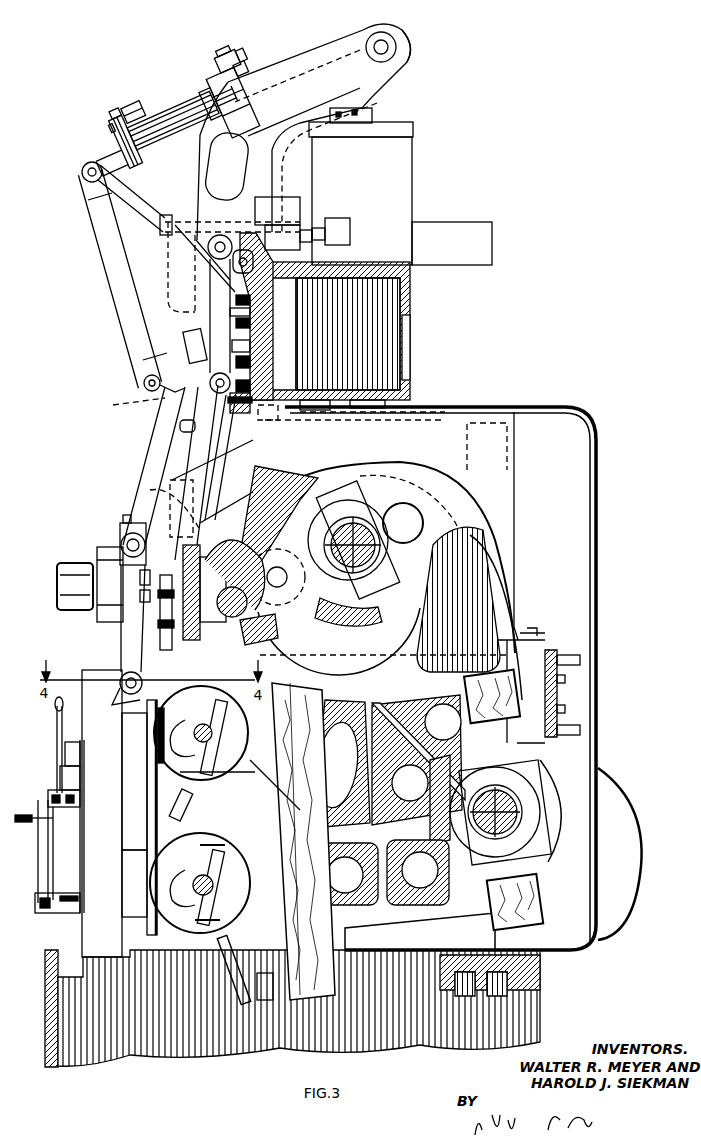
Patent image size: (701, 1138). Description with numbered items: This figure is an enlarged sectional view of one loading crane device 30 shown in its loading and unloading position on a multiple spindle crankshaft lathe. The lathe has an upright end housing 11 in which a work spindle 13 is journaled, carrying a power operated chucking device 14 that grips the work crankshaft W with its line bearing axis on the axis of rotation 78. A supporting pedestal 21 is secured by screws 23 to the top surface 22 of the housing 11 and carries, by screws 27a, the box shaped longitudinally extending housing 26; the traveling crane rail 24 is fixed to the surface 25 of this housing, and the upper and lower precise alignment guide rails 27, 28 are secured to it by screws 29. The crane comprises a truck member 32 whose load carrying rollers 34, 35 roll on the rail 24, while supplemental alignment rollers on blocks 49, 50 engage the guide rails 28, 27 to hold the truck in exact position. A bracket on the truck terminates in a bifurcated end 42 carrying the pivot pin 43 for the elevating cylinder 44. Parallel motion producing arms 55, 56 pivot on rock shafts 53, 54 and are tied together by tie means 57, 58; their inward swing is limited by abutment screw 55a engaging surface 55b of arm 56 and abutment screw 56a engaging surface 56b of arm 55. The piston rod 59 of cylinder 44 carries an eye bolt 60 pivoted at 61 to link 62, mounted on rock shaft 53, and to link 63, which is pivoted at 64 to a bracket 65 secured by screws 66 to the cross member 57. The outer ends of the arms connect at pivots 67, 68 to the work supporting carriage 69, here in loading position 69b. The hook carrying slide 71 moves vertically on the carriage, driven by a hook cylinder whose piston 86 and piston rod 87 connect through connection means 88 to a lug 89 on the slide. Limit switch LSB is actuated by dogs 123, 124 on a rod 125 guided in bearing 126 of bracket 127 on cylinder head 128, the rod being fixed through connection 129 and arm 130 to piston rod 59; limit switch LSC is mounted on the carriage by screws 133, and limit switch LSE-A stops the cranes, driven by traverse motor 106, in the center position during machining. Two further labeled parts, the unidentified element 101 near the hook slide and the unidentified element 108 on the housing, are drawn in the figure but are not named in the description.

The upright end housing 11 is at (119, 644).
The work spindle 13 is at (210, 700).
The chucking device 14 is at (218, 700).
The supporting pedestal 21 is at (515, 493).
The top surface 22 is at (232, 522).
The screw 23 is at (160, 505).
The traveling crane rail 24 is at (252, 346).
The surface 25 is at (252, 322).
The box shaped longitudinally extending housing 26 is at (410, 296).
The upper precise alignment guide rail 27 is at (240, 235).
The screw 27a is at (298, 430).
The lower precise alignment guide rail 28 is at (266, 422).
The screw 29 is at (255, 270).
The loading crane device 30 is at (120, 902).
The truck member 32 is at (205, 275).
The load carrying roller 34 is at (252, 300).
The load carrying roller 35 is at (252, 362).
The bifurcated end 42 is at (400, 52).
The pivot pin 43 is at (387, 42).
The elevating cylinder 44 is at (320, 48).
The block 49 is at (238, 418).
The block 50 is at (285, 198).
The rock shaft 53 is at (222, 210).
The rock shaft 54 is at (217, 415).
The parallel motion producing arm 55 is at (150, 462).
The abutment screw 55a is at (140, 576).
The surface 55b is at (140, 595).
The parallel motion producing arm 56 is at (212, 478).
The abutment screw 56a is at (170, 402).
The surface 56b is at (180, 427).
The tie means 57 is at (212, 370).
The tie means 58 is at (198, 498).
The piston rod 59 is at (176, 128).
The eye bolt 60 is at (118, 145).
The pivotal connection 61 is at (82, 175).
The link 62 is at (148, 218).
The link 63 is at (112, 290).
The pivotal connection 64 is at (143, 384).
The bracket 65 is at (182, 355).
The screw 66 is at (128, 404).
The pivotal connection 67 is at (118, 535).
The pivotal connection 68 is at (120, 695).
The work supporting carriage 69 is at (125, 812).
The loading position 69b is at (124, 868).
The hook carrying slide 71 is at (156, 812).
The line bearing axis of rotation 78 is at (185, 715).
The piston 86 is at (183, 570).
The piston rod 87 is at (222, 575).
The connection means 88 is at (240, 626).
The lug 89 is at (170, 640).
The workpiece holder 101 is at (190, 735).
The hydraulic traverse motor 106 is at (172, 297).
The washer 108 is at (252, 312).
The dog 123 is at (129, 102).
The dog 124 is at (238, 49).
The rod 125 is at (199, 97).
The bearing 126 is at (248, 65).
The bracket 127 is at (243, 98).
The cylinder head 128 is at (201, 94).
The connection 129 is at (107, 106).
The arm 130 is at (100, 128).
The screw 133 is at (112, 620).
The limit switch LSB is at (219, 52).
The limit switch LSC is at (90, 566).
The limit switch LSE-A is at (335, 222).
The work crankshaft W is at (172, 745).